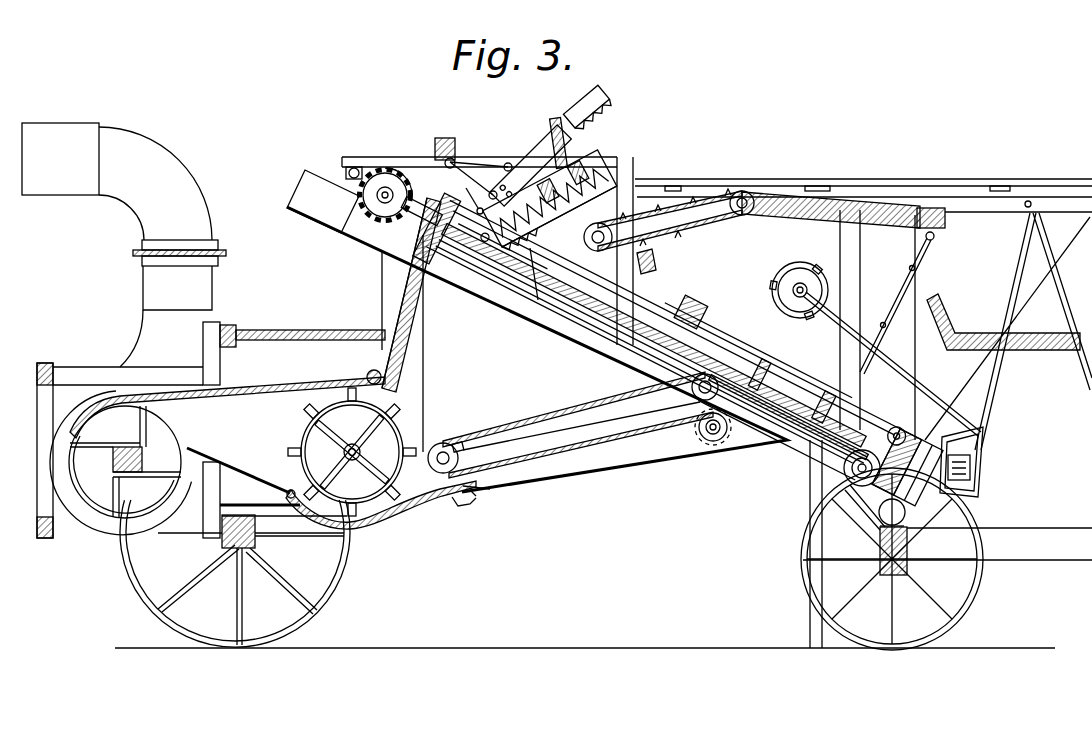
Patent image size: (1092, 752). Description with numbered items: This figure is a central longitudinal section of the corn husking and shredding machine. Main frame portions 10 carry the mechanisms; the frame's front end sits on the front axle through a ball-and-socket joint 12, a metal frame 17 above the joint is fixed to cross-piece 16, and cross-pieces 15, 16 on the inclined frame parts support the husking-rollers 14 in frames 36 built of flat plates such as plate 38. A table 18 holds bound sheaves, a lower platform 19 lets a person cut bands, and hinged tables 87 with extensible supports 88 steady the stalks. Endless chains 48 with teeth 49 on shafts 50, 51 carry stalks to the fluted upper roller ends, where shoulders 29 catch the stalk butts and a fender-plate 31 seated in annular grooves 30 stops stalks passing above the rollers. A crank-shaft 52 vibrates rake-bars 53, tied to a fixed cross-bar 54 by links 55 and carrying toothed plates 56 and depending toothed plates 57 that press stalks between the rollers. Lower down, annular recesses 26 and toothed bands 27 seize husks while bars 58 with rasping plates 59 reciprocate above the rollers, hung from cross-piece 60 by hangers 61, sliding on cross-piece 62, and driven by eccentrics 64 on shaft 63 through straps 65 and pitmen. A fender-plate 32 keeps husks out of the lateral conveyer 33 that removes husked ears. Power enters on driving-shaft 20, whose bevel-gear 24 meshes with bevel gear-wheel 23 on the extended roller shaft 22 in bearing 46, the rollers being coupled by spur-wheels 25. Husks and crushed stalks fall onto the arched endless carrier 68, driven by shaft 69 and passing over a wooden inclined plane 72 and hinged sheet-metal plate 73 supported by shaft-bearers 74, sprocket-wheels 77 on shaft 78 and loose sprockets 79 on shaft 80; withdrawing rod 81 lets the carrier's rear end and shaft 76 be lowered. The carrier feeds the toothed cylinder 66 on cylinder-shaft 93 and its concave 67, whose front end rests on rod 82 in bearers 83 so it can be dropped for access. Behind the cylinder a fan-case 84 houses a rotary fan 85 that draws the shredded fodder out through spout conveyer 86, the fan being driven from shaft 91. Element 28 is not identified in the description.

The main portions of the frame 10 is at (537, 333).
The ball-and-socket joint 12 is at (880, 510).
The husking-roller 14 is at (748, 346).
The cross-piece 15 is at (420, 250).
The cross-piece 16 is at (945, 485).
The metal frame 17 is at (935, 500).
The table 18 is at (860, 200).
The platform 19 is at (1055, 343).
The driving-shaft 20 is at (377, 197).
The shaft of husking-roller 22 is at (405, 186).
The bevel gear-wheel 23 is at (418, 222).
The bevel-gear 24 is at (346, 172).
The spur-wheels 25 is at (950, 440).
The annular recesses 26 is at (758, 366).
The toothed metal bands 27 is at (822, 395).
The hopper support 28 is at (560, 232).
The shoulders 29 is at (497, 255).
The annular grooves 30 is at (470, 243).
The fender-plate 31 is at (468, 190).
The fender-plate 32 is at (896, 432).
The conveyer 33 is at (990, 468).
The frames 36 is at (449, 158).
The flat metal plate 38 is at (405, 305).
The bearing 46 is at (424, 290).
The endless chains 48 is at (688, 228).
The teeth 49 is at (728, 230).
The shaft 50 is at (594, 243).
The shaft 51 is at (752, 208).
The crank-shaft 52 is at (545, 145).
The rake-bars 53 is at (600, 122).
The cross-bar 54 is at (450, 137).
The links 55 is at (478, 155).
The toothed metal plates 56 is at (612, 106).
The metal plates 57 is at (530, 217).
The bars 58 is at (730, 326).
The metal plates 59 is at (700, 310).
The cross-piece 60 is at (946, 228).
The hangers 61 is at (872, 350).
The cross-piece 62 is at (656, 268).
The shaft 63 is at (793, 290).
The eccentrics 64 is at (785, 270).
The straps 65 is at (818, 262).
The cylinder 66 is at (302, 438).
The concave 67 is at (398, 524).
The endless carrier 68 is at (582, 404).
The shaft 69 is at (694, 380).
The wooden inclined plane 72 is at (732, 436).
The sheet-metal plate 73 is at (665, 396).
The shaft-bearers 74 is at (462, 442).
The shaft 76 is at (440, 445).
The sprocket-wheels 77 is at (845, 470).
The shaft 78 is at (856, 505).
The loose sprockets 79 is at (700, 430).
The shaft 80 is at (710, 442).
The rod 81 is at (466, 449).
The rod 82 is at (462, 505).
The bearers 83 is at (480, 490).
The fan-case 84 is at (285, 378).
The rotary fan 85 is at (117, 492).
The spout conveyer 86 is at (143, 292).
The tables 87 is at (760, 179).
The extensible supports 88 is at (808, 623).
The shaft 91 is at (372, 371).
The cylinder-shaft 93 is at (352, 444).